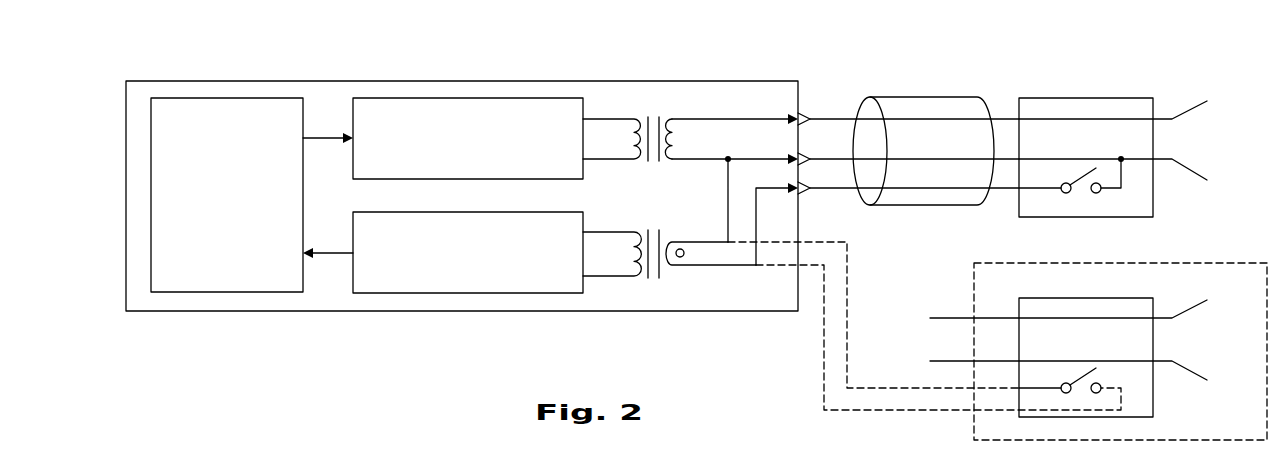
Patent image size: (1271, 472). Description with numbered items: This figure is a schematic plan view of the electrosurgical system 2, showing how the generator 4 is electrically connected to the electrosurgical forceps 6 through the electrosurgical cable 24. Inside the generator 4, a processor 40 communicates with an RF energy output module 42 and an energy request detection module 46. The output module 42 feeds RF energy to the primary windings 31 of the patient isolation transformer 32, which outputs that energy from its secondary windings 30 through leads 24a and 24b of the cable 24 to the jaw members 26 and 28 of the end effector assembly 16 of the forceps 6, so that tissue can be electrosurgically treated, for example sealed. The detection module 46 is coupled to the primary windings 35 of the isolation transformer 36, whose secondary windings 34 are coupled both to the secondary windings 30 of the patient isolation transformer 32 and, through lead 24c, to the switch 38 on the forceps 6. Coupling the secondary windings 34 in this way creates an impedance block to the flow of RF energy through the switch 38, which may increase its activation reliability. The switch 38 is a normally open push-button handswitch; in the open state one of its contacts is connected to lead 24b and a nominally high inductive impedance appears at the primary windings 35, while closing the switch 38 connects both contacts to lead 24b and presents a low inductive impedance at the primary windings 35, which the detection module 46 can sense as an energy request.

The electrosurgical system 2 is at (121, 66).
The generator 4 is at (350, 81).
The electrosurgical forceps 6 is at (1088, 98).
The end effector assembly 16 is at (1192, 68).
The electrosurgical cable 24 is at (950, 97).
The lead 24a is at (832, 117).
The lead 24b is at (835, 162).
The lead 24c is at (838, 190).
The jaw member 26 is at (1190, 100).
The jaw member 28 is at (1190, 180).
The secondary windings 30 is at (686, 126).
The primary windings 31 is at (619, 104).
The patient isolation transformer 32 is at (662, 104).
The secondary windings 34 is at (697, 291).
The primary windings 35 is at (620, 290).
The isolation transformer 36 is at (663, 290).
The switch 38 is at (1087, 210).
The processor 40 is at (225, 97).
The RF energy output module 42 is at (483, 98).
The energy request detection module 46 is at (483, 293).